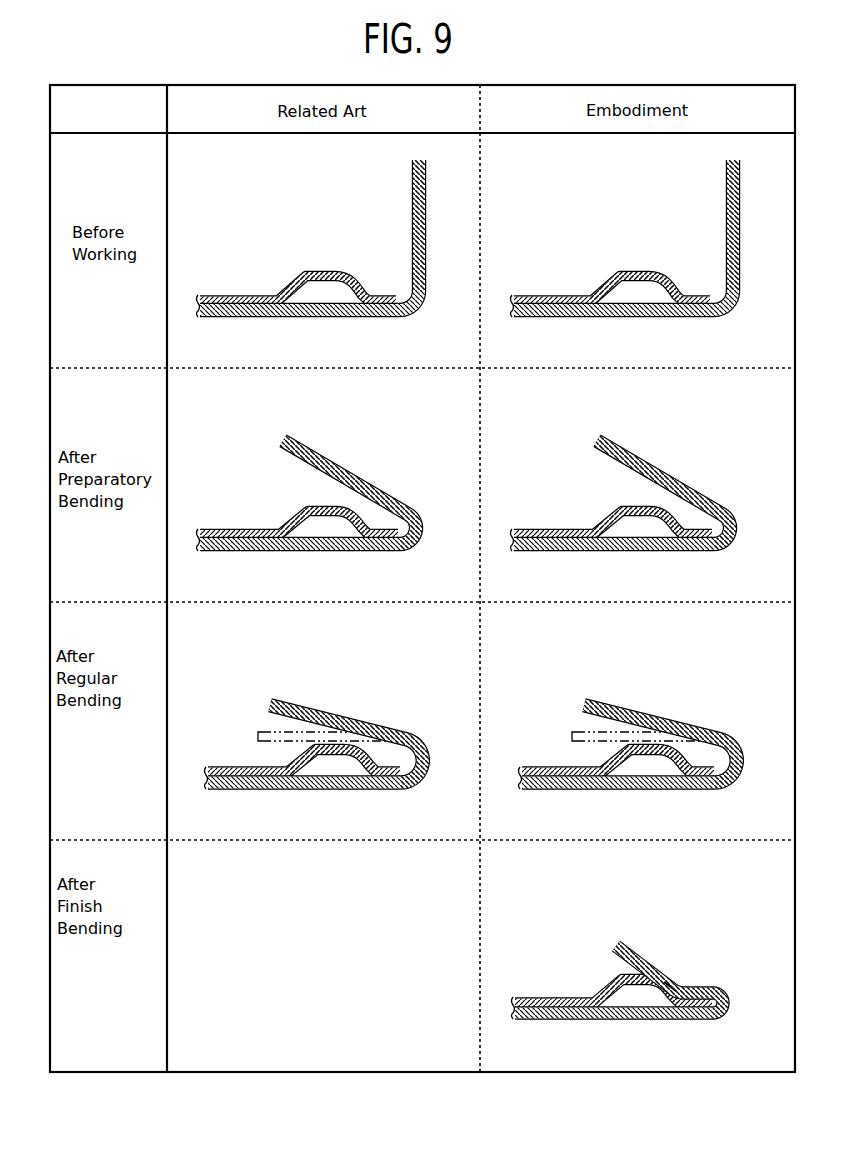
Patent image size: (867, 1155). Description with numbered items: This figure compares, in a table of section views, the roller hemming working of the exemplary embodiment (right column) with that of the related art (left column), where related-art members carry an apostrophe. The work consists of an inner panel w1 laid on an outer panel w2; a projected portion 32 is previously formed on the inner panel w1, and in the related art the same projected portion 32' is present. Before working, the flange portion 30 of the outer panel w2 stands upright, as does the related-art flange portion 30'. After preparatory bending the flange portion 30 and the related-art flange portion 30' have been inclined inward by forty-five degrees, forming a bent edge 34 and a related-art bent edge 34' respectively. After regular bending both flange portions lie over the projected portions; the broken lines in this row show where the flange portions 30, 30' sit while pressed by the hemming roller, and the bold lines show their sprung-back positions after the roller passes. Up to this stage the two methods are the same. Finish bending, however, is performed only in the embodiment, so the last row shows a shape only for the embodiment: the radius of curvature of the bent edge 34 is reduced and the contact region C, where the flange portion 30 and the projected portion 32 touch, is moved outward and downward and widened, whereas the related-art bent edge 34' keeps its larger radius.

The flange portion 30 is at (658, 576).
The flange portion (related art) 30' is at (344, 449).
The projected portion 32 is at (641, 647).
The projected portion (related art) 32' is at (327, 501).
The bent edge 34 is at (742, 749).
The bent edge (related art) 34' is at (430, 634).
The inner panel w1 is at (231, 297).
The outer panel w2 is at (224, 317).
The contact region C is at (670, 980).